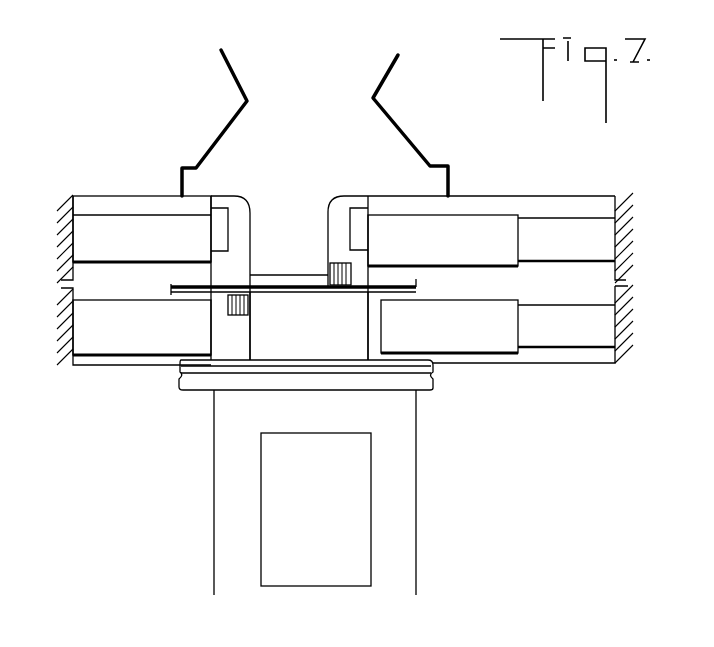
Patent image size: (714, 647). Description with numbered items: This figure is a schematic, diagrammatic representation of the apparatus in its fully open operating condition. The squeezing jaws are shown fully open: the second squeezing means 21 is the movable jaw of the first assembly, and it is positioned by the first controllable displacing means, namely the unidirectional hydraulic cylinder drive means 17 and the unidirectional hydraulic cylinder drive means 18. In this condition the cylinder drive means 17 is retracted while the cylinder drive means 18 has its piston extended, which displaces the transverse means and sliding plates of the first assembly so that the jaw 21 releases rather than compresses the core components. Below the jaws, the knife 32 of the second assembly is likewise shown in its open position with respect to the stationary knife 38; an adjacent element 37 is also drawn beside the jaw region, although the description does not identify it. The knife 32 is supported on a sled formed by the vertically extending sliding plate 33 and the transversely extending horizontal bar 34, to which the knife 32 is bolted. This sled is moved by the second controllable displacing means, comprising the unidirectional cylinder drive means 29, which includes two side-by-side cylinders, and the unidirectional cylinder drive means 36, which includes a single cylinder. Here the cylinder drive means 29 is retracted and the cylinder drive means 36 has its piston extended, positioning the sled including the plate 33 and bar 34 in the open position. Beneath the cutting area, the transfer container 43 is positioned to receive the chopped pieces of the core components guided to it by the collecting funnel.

The unidirectional hydraulic cylinder drive means 17 is at (120, 212).
The unidirectional hydraulic cylinder drive means 18 is at (493, 212).
The second squeezing means 21 is at (248, 230).
The unidirectional hydraulic cylinder drive means 29 is at (113, 343).
The knife 32 is at (245, 303).
The sliding plate 33 is at (313, 345).
The horizontal bar 34 is at (247, 345).
The unidirectional hydraulic cylinder drive means 36 is at (467, 353).
The right upright leg 37 is at (327, 220).
The stationary knife 38 is at (342, 284).
The transfer container 43 is at (365, 472).